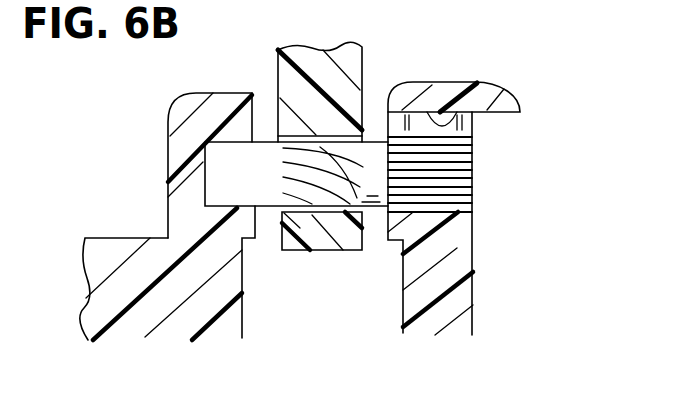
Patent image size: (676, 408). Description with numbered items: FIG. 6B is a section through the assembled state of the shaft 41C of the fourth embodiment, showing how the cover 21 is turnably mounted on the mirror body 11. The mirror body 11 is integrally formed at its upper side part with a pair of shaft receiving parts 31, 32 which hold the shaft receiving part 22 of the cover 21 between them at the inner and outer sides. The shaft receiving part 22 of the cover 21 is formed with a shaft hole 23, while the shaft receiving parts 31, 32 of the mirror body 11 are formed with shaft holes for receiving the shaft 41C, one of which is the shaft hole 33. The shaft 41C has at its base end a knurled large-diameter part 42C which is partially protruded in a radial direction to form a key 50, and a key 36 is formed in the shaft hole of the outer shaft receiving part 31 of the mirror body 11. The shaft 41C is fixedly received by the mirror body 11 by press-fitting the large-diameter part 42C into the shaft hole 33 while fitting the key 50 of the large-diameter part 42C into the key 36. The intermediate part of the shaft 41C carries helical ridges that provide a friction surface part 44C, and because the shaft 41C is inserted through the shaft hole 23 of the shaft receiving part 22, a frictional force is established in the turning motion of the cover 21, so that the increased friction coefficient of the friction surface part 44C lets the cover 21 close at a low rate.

The mirror body 11 is at (462, 296).
The cover 21 is at (362, 67).
The shaft receiving part 22 is at (296, 248).
The shaft hole 23 is at (308, 146).
The shaft receiving part 31 is at (455, 244).
The shaft receiving part 32 is at (190, 138).
The shaft hole 33 is at (455, 200).
The key 36 is at (465, 84).
The shaft 41C is at (236, 178).
The large-diameter part 42C is at (455, 175).
The friction surface part 44C is at (318, 195).
The key 50 is at (463, 125).